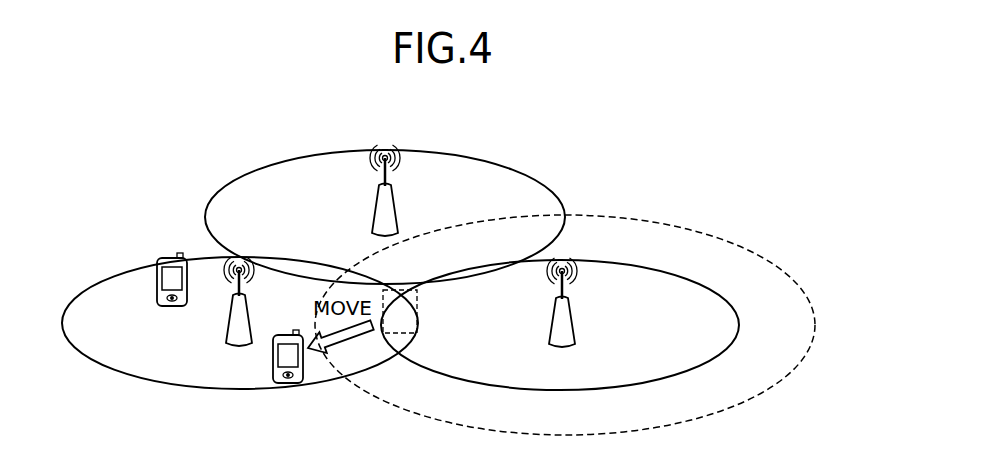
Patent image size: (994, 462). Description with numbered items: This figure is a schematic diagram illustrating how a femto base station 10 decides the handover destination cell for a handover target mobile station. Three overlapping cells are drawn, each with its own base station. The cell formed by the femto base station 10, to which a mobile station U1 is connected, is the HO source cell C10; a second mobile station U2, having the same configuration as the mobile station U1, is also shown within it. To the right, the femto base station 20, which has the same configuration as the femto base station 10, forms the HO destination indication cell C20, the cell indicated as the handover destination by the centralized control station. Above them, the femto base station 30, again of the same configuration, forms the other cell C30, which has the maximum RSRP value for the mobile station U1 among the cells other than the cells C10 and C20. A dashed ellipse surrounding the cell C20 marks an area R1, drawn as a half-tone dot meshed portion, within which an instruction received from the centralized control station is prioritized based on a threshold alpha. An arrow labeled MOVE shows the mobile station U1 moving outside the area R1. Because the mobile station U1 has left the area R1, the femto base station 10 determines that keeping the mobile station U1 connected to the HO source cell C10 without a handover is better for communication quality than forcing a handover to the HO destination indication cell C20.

The femto base station 10 is at (232, 327).
The femto base station 20 is at (566, 320).
The femto base station 30 is at (386, 205).
The mobile station U1 is at (273, 366).
The mobile station U2 is at (157, 296).
The HO source cell C10 is at (110, 280).
The HO destination indication cell C20 is at (717, 238).
The other cell C30 is at (498, 163).
The area R1 is at (784, 276).